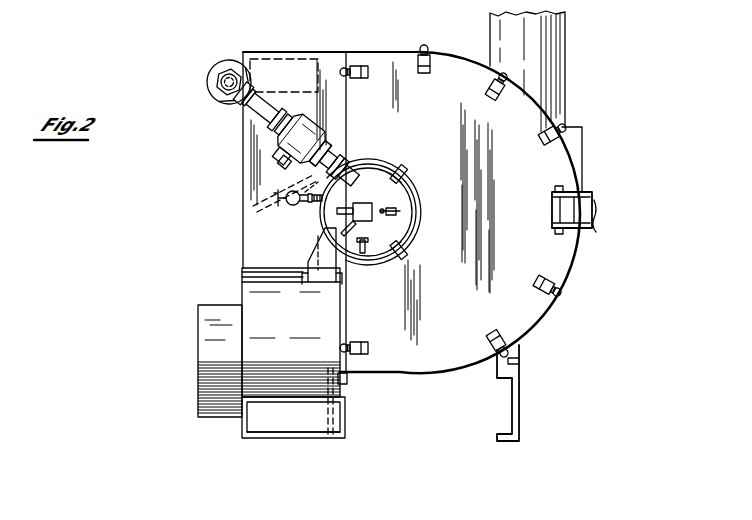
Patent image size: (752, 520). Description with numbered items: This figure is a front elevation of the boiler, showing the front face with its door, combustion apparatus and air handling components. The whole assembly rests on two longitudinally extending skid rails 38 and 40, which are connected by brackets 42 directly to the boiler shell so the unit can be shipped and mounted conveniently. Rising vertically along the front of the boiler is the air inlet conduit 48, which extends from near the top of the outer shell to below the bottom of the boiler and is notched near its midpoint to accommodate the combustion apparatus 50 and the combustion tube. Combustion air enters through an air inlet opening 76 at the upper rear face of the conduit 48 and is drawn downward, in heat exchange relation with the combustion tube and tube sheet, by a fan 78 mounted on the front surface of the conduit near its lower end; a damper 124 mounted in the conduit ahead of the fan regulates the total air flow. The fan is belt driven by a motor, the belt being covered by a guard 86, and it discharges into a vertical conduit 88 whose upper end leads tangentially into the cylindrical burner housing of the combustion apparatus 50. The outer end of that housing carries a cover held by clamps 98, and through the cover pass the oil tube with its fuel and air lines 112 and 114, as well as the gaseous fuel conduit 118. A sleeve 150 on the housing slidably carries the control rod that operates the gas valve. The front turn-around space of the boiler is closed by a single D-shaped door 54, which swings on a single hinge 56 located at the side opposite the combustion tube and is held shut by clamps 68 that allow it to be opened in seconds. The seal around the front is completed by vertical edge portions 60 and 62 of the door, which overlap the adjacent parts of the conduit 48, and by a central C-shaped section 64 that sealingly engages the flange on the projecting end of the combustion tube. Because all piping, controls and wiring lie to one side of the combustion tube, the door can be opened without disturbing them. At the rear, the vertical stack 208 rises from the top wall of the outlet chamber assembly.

The skid rail 38 is at (340, 410).
The skid rail 40 is at (510, 405).
The brackets 42 is at (327, 368).
The air inlet conduit 48 is at (243, 160).
The combustion apparatus 50 is at (385, 161).
The door 54 is at (402, 78).
The hinge 56 is at (580, 219).
The vertical edge portion 60 is at (350, 121).
The vertical edge portion 62 is at (347, 314).
The C shaped section 64 is at (416, 206).
The clamps 68 is at (352, 66).
The air inlet opening 76 is at (302, 64).
The fan 78 is at (285, 375).
The guard 86 is at (207, 348).
The vertical conduit 88 is at (308, 251).
The clamps 98 is at (392, 212).
The fuel line 112 is at (350, 226).
The air line 114 is at (349, 208).
The conduit 118 is at (340, 163).
The damper 124 is at (260, 196).
The sleeve 150 is at (318, 198).
The vertical stack 208 is at (546, 50).